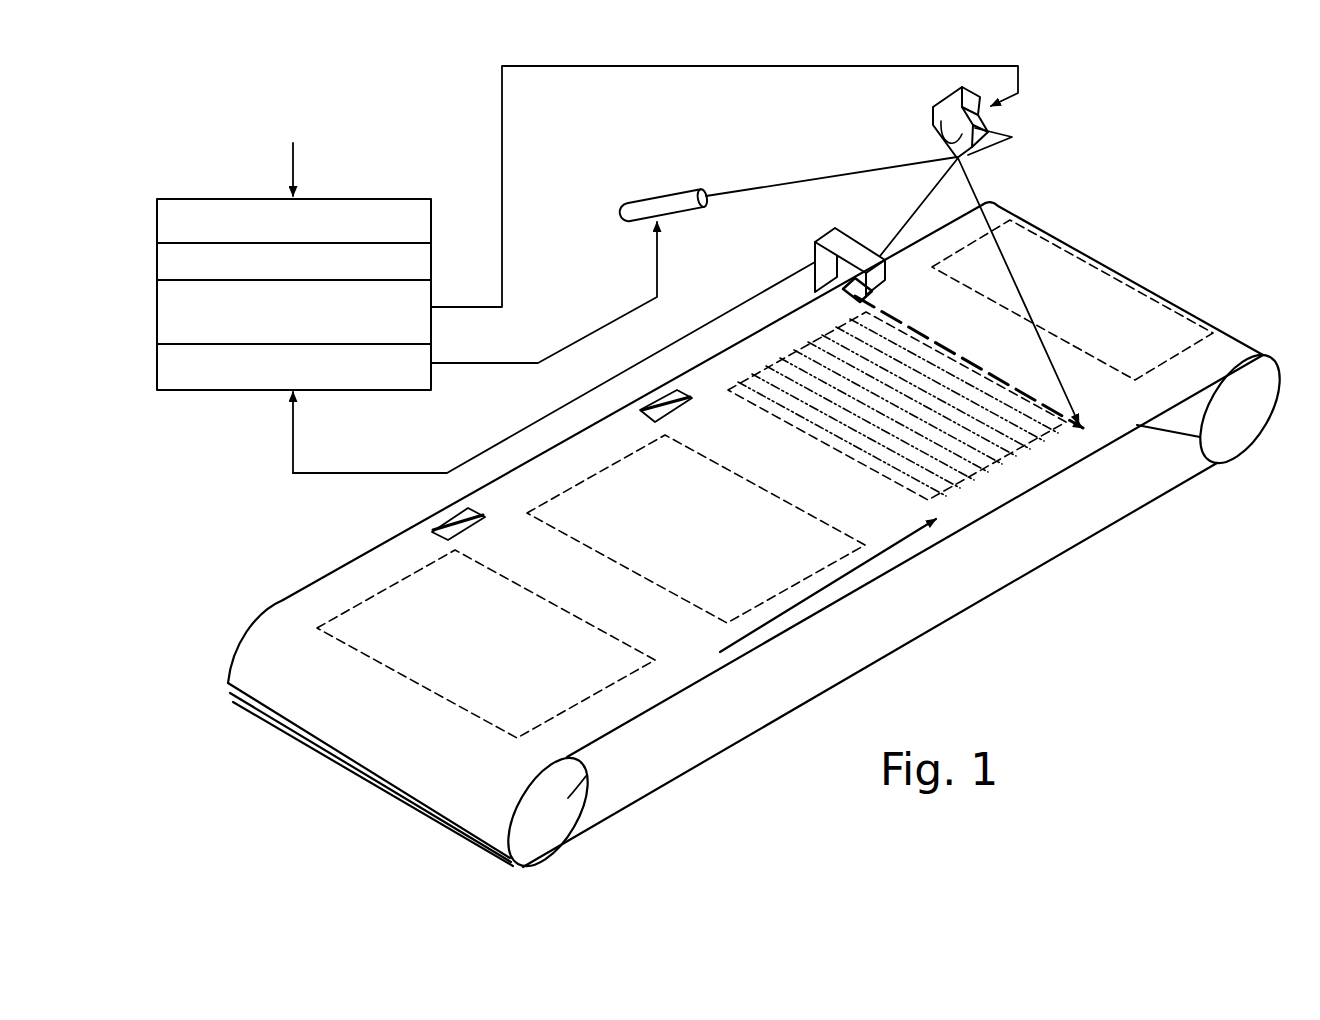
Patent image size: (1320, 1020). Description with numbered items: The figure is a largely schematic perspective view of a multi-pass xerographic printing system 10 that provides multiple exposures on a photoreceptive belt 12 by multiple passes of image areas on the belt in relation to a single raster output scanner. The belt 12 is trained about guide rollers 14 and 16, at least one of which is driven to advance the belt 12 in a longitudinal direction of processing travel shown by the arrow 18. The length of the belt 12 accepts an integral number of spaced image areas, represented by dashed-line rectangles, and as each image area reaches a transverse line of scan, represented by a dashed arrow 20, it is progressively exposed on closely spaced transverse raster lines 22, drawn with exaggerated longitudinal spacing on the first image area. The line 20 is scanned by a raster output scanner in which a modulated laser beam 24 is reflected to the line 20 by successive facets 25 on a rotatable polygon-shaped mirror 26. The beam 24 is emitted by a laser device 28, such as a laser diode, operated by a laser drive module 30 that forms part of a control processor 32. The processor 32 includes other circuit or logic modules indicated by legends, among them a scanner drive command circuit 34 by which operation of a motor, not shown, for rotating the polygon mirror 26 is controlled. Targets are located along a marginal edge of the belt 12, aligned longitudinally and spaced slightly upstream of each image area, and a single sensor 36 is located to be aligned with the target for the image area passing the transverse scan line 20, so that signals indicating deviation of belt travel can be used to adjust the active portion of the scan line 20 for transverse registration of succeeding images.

The multi-pass xerographic printing system 10 is at (467, 58).
The photoreceptive belt 12 is at (738, 658).
The guide roller 14 is at (585, 792).
The guide roller 16 is at (1256, 421).
The arrow 18 is at (835, 583).
The transverse line of scan 20 is at (962, 353).
The transverse raster lines 22 is at (782, 356).
The modulated laser beam 24 is at (858, 170).
The facets 25 is at (1006, 141).
The polygon-shaped mirror 26 is at (941, 104).
The laser device 28 is at (660, 200).
The laser drive module 30 is at (378, 390).
The control processor 32 is at (346, 196).
The scanner drive command circuit 34 is at (420, 306).
The sensor 36 is at (832, 241).